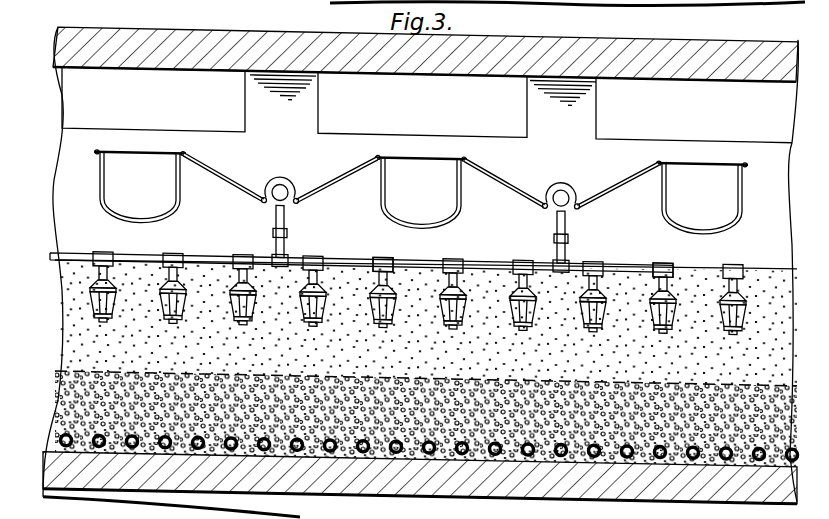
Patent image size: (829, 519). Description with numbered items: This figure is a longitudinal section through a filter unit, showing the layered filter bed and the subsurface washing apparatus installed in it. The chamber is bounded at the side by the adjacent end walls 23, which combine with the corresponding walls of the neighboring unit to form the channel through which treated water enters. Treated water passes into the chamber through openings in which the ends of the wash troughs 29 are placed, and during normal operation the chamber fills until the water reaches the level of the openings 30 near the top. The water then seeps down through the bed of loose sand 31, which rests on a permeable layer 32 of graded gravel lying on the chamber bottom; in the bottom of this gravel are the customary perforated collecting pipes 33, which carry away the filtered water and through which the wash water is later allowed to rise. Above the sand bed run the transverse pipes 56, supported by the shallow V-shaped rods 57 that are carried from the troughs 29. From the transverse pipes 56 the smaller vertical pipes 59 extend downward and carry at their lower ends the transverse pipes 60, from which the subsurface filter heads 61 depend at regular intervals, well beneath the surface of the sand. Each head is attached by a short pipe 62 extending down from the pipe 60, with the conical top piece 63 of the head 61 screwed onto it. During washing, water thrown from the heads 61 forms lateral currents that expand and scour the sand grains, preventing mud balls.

The adjacent end walls 23 is at (78, 212).
The wash troughs 29 is at (168, 213).
The openings 30 is at (141, 128).
The bed of loose sand 31 is at (442, 259).
The permeable layer 32 is at (70, 397).
The perforated collecting pipes 33 is at (127, 434).
The transverse pipes 56 is at (293, 181).
The shallow V-shaped rods 57 is at (224, 172).
The smaller vertical pipes 59 is at (285, 222).
The transverse pipes 60 is at (386, 258).
The subsurface filter heads 61 is at (157, 298).
The short pipes 62 is at (378, 284).
The top pieces 63 is at (181, 285).